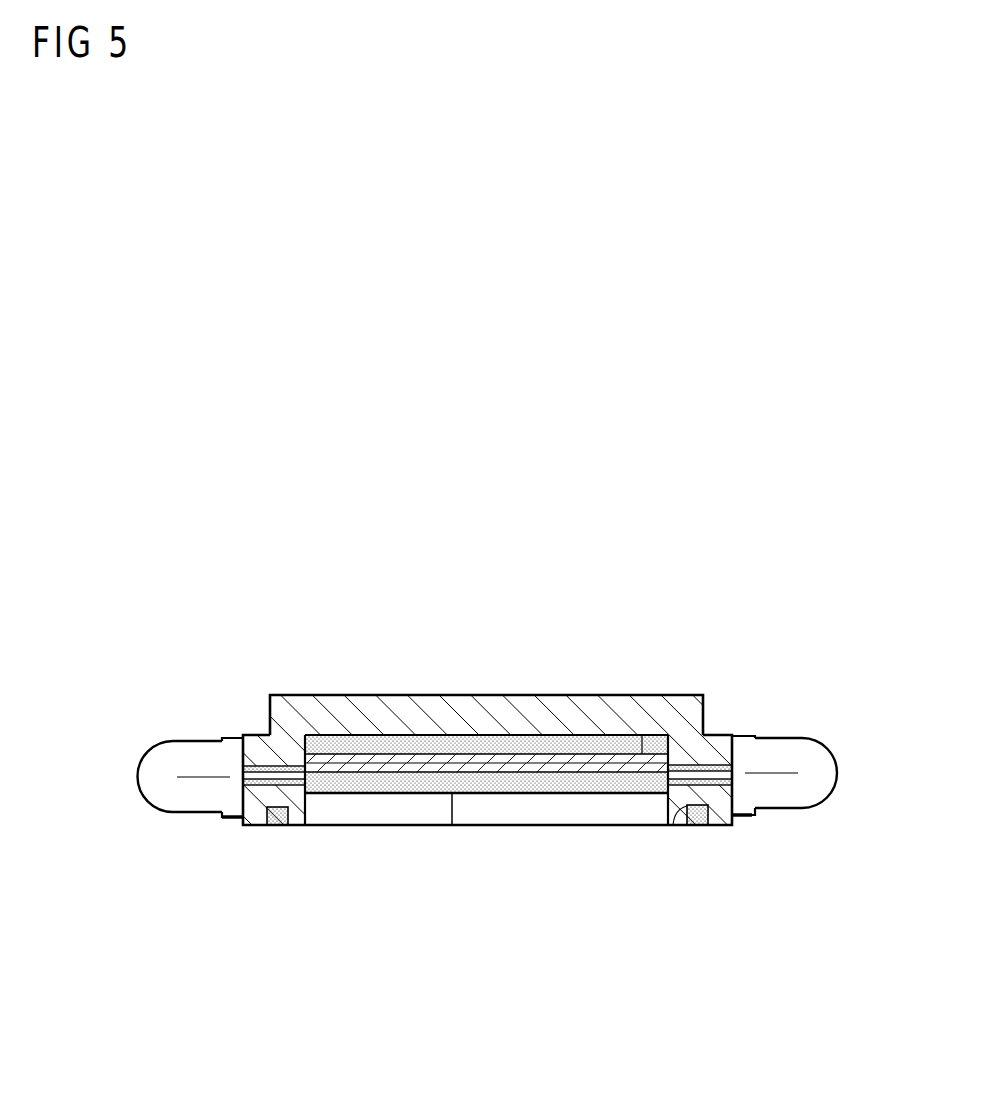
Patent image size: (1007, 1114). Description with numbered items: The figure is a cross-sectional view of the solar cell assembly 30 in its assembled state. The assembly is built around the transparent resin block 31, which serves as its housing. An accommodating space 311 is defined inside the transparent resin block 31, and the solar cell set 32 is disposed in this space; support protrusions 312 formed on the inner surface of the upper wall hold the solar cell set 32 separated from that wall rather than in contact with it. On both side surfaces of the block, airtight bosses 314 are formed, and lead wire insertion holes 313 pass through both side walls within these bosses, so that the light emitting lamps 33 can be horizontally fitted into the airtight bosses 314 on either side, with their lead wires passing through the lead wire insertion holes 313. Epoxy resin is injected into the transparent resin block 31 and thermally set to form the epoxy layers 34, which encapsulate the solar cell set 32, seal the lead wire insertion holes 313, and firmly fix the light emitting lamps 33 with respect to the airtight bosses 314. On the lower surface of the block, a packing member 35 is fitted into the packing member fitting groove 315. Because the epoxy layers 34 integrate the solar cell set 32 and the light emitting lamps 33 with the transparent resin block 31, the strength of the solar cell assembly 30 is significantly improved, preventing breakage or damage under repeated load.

The solar cell assembly 30 is at (492, 566).
The transparent resin block 31 is at (668, 712).
The accommodating space 311 is at (500, 735).
The support protrusions 312 is at (320, 708).
The lead wire insertion holes 313 is at (263, 790).
The airtight bosses 314 is at (230, 825).
The packing member fitting groove 315 is at (673, 825).
The solar cell set 32 is at (600, 757).
The light emitting lamps 33 is at (160, 768).
The epoxy layers 34 is at (417, 745).
The packing member 35 is at (697, 812).